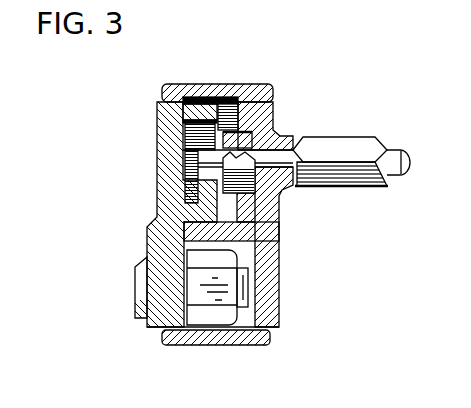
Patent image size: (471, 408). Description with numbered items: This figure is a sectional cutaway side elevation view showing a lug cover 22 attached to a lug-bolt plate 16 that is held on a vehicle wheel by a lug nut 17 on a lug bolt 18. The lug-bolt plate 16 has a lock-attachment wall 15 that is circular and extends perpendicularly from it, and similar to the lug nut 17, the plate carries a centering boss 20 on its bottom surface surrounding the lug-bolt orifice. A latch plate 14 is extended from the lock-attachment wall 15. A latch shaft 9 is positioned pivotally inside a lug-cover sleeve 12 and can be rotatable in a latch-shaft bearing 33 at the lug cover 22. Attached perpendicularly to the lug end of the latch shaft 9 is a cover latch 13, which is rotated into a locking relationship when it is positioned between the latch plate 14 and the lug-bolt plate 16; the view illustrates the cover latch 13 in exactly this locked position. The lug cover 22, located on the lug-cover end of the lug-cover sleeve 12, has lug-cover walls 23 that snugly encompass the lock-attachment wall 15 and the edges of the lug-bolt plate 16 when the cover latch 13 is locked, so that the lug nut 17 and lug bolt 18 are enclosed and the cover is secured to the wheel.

The latch shaft 9 is at (397, 153).
The lug-cover sleeve 12 is at (330, 140).
The cover latch 13 is at (158, 183).
The latch plate 14 is at (217, 195).
The lock-attachment wall 15 is at (190, 103).
The lug-bolt plate 16 is at (158, 143).
The lug nut 17 is at (207, 308).
The lug bolt 18 is at (245, 288).
The centering boss 20 is at (135, 280).
The lug cover 22 is at (210, 231).
The lug-cover walls 23 is at (212, 97).
The latch-shaft bearing 33 is at (262, 110).